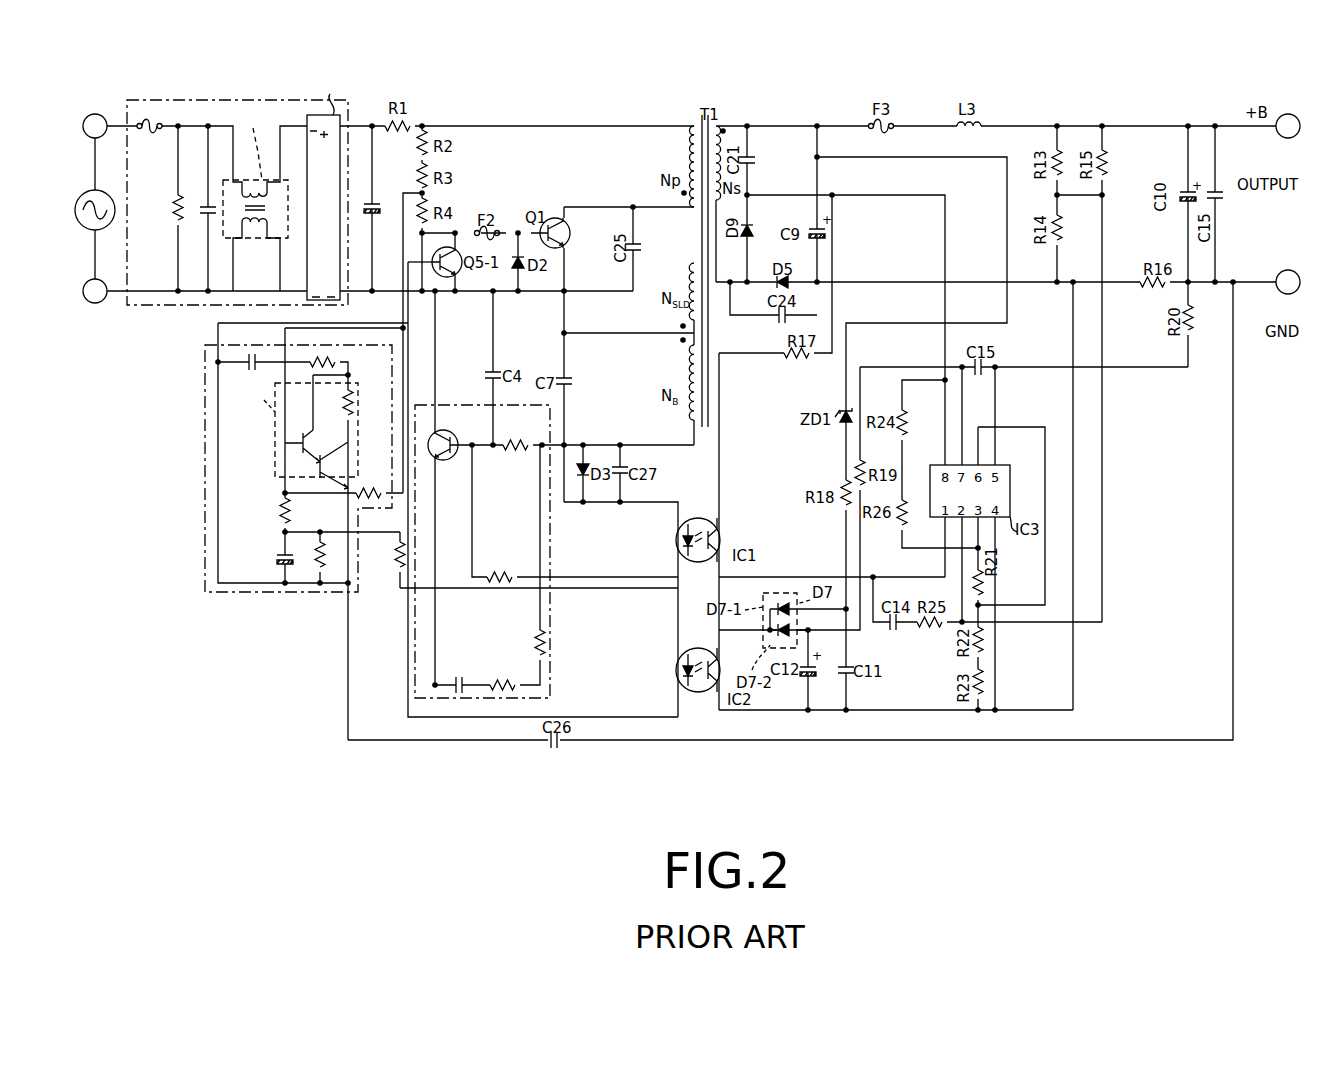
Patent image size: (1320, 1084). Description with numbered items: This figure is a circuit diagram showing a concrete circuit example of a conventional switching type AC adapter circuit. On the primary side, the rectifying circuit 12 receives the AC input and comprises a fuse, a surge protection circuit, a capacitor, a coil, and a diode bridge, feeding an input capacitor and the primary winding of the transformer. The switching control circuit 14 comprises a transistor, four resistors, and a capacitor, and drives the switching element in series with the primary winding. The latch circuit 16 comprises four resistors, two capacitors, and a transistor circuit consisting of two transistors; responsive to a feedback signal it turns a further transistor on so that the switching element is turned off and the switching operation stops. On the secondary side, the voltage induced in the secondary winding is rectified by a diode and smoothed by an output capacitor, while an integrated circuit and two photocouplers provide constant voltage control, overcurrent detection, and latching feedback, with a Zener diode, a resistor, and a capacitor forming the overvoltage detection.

The rectifying circuit 12 is at (217, 100).
The switching control circuit 14 is at (456, 405).
The latch circuit 16 is at (205, 414).